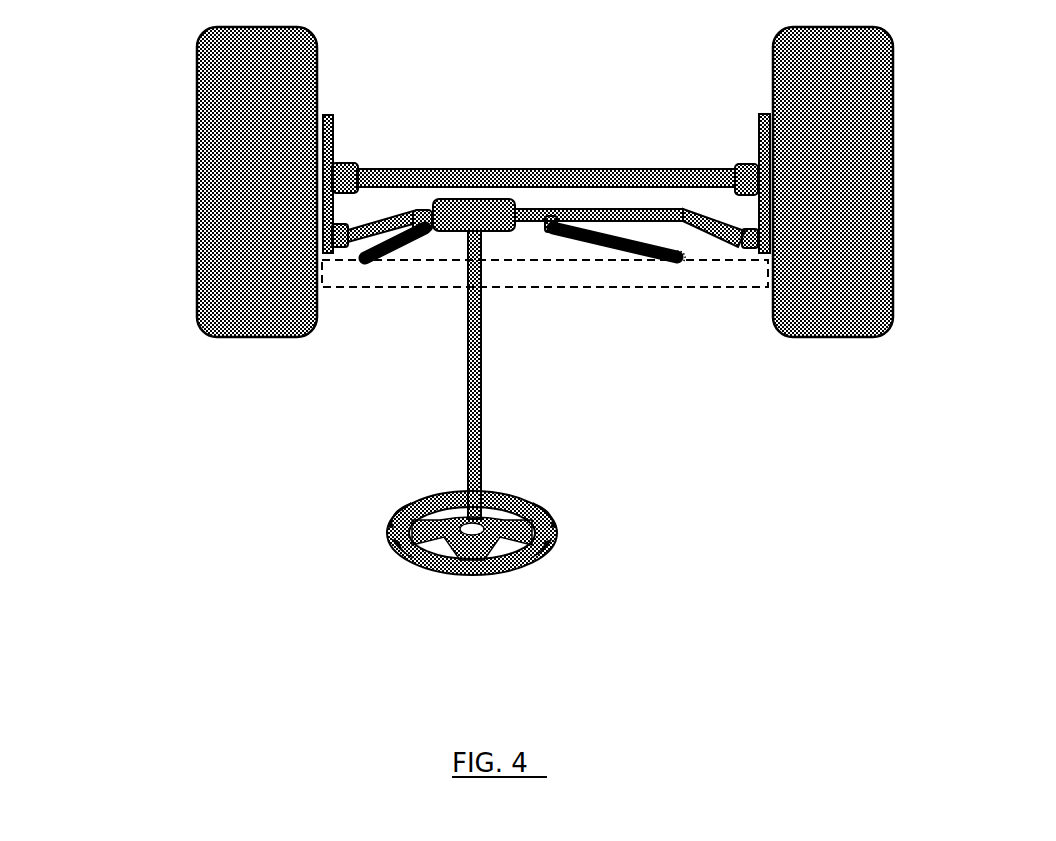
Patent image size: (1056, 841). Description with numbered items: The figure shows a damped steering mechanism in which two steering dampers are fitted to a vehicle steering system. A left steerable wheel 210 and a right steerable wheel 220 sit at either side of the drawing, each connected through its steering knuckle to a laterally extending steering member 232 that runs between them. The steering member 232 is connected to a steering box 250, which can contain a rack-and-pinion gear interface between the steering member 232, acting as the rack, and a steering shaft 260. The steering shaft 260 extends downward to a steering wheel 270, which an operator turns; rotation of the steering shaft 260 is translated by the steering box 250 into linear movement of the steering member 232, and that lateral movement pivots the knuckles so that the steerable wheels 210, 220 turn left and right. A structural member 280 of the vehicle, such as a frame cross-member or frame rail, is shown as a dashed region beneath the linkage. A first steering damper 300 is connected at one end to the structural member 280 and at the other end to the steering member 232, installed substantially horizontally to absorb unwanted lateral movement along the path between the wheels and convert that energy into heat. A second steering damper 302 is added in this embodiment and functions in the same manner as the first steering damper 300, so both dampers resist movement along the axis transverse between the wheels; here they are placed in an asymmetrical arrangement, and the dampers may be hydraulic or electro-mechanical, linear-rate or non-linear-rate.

The left steerable wheel 210 is at (192, 182).
The right steerable wheel 220 is at (899, 182).
The steering member 232 is at (546, 167).
The steering box 250 is at (518, 263).
The steering shaft 260 is at (540, 375).
The steering wheel 270 is at (525, 522).
The structural member 280 is at (545, 319).
The steering damper 300 is at (647, 299).
The second steering damper 302 is at (377, 283).